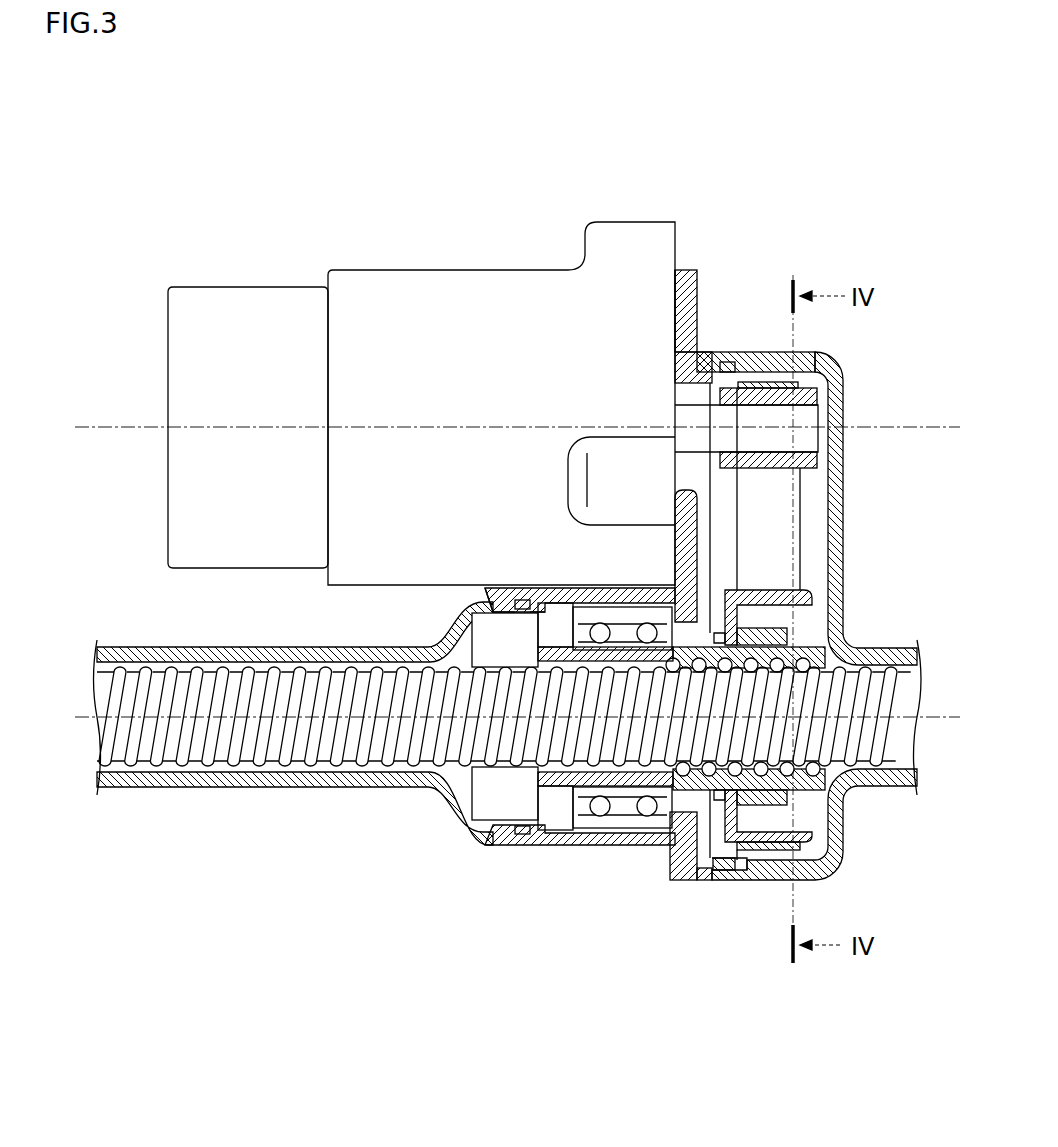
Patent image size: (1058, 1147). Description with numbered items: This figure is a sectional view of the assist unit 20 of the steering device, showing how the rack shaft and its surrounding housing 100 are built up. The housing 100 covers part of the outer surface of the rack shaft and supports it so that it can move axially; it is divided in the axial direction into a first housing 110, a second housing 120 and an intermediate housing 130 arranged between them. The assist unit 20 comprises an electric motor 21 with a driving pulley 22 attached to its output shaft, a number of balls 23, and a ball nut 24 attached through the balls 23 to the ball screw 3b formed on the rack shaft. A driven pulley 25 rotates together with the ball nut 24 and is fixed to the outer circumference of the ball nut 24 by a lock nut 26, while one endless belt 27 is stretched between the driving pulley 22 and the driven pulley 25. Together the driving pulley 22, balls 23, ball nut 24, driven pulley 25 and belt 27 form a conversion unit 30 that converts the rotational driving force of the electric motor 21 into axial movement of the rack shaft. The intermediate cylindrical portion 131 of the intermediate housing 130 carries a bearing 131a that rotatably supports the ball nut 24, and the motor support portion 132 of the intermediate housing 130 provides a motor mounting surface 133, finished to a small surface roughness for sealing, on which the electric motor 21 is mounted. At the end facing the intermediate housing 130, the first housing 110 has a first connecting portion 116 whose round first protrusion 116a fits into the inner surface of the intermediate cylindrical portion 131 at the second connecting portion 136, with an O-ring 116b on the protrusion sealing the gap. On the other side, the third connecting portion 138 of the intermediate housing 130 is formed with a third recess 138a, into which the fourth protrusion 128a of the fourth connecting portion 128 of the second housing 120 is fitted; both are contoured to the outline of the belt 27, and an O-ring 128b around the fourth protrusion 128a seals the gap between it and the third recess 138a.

The assist unit 20 is at (284, 182).
The electric motor 21 is at (385, 270).
The driving pulley 22 is at (845, 470).
The balls 23 is at (845, 772).
The ball nut 24 is at (830, 806).
The driven pulley 25 is at (820, 592).
The lock nut 26 is at (790, 633).
The endless belt 27 is at (803, 527).
The conversion unit 30 is at (820, 386).
The ball screw 3b is at (318, 774).
The housing 100 is at (708, 1063).
The first housing 110 is at (405, 790).
The first connecting portion 116 is at (497, 590).
The first protrusion 116a is at (510, 598).
The O-ring 116b is at (522, 600).
The second housing 120 is at (777, 882).
The fourth connecting portion 128 is at (780, 352).
The fourth protrusion 128a is at (740, 355).
The O-ring 128b is at (727, 362).
The intermediate housing 130 is at (560, 847).
The intermediate cylindrical portion 131 is at (597, 848).
The bearing 131a is at (625, 840).
The motor support portion 132 is at (697, 272).
The motor mounting surface 133 is at (675, 325).
The second connecting portion 136 is at (565, 590).
The third connecting portion 138 is at (735, 880).
The third recess 138a is at (710, 870).